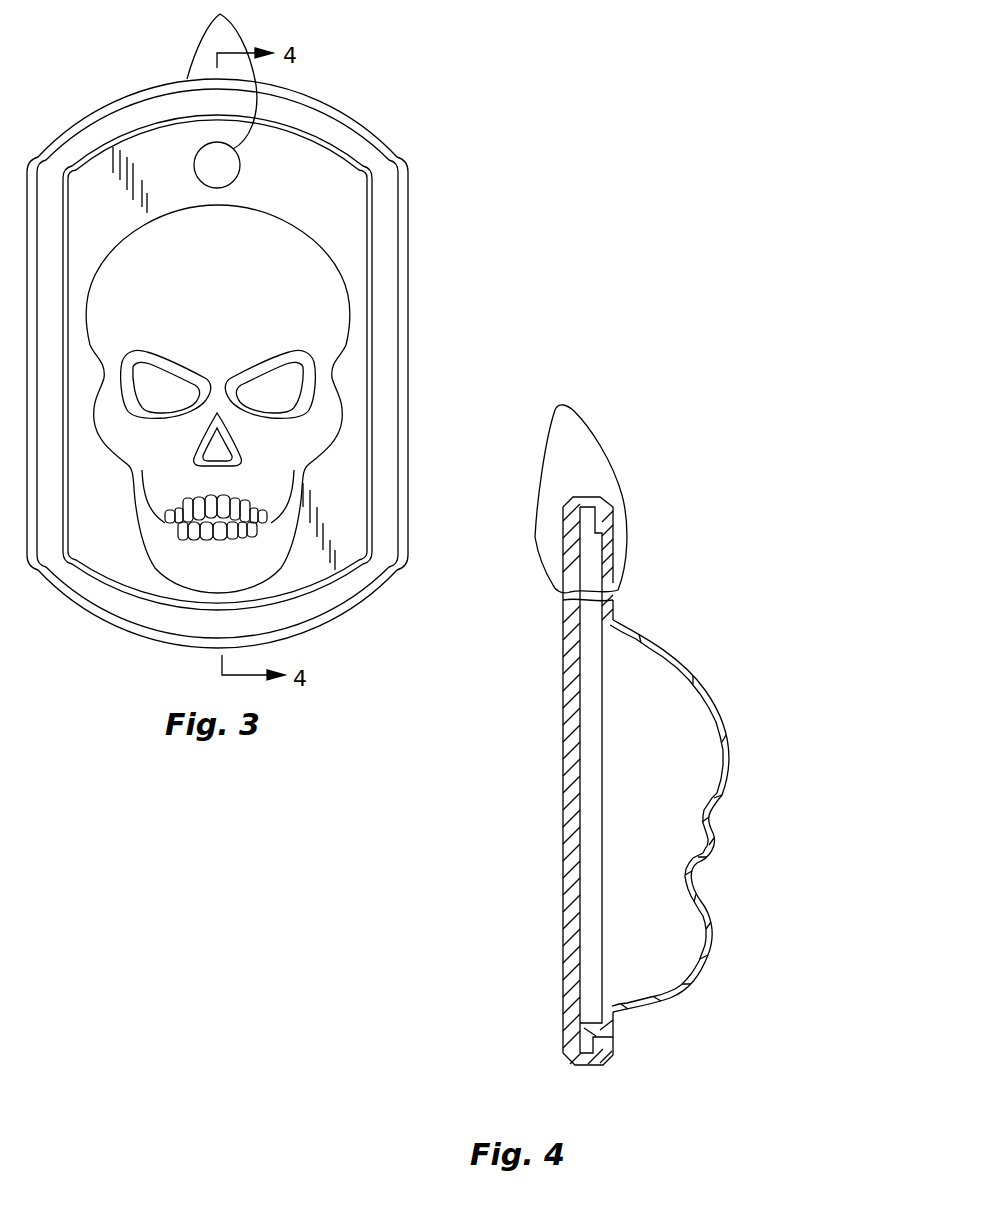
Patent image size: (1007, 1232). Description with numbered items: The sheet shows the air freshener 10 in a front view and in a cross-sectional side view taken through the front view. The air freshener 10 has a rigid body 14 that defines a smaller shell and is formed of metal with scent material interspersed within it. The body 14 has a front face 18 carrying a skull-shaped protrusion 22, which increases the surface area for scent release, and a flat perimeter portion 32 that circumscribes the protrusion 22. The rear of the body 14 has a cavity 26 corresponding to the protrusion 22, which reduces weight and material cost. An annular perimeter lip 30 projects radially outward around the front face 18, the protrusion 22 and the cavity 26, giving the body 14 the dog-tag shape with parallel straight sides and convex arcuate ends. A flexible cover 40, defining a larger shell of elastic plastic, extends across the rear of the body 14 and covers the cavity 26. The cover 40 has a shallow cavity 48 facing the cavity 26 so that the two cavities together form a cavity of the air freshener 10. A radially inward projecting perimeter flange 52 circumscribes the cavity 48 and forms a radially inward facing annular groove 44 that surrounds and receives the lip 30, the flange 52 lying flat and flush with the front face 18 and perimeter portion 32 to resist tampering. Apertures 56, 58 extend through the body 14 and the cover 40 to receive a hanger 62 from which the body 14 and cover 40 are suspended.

In FIG. 3, the air freshener 10 is at (448, 118).
In FIG. 4, the air freshener 10 is at (510, 970).
In FIG. 3, the rigid body 14 is at (350, 207).
In FIG. 4, the rigid body 14 is at (720, 711).
In FIG. 3, the front face 18 is at (308, 296).
In FIG. 4, the front face 18 is at (713, 840).
In FIG. 3, the protrusion 22 is at (340, 405).
In FIG. 4, the protrusion 22 is at (713, 927).
In FIG. 4, the cavity 26 is at (657, 938).
In FIG. 4, the annular perimeter lip 30 is at (587, 1047).
In FIG. 3, the perimeter portion 32 is at (347, 477).
In FIG. 3, the flexible cover 40 is at (412, 236).
In FIG. 4, the flexible cover 40 is at (556, 737).
In FIG. 4, the annular groove 44 is at (588, 1065).
In FIG. 4, the cavity 48 is at (590, 815).
In FIG. 3, the perimeter flange 52 is at (362, 573).
In FIG. 4, the perimeter flange 52 is at (607, 517).
In FIG. 3, the aperture 56 is at (240, 176).
In FIG. 4, the aperture 56 is at (613, 597).
In FIG. 4, the aperture 58 is at (565, 602).
In FIG. 3, the hanger 62 is at (200, 40).
In FIG. 4, the hanger 62 is at (600, 440).